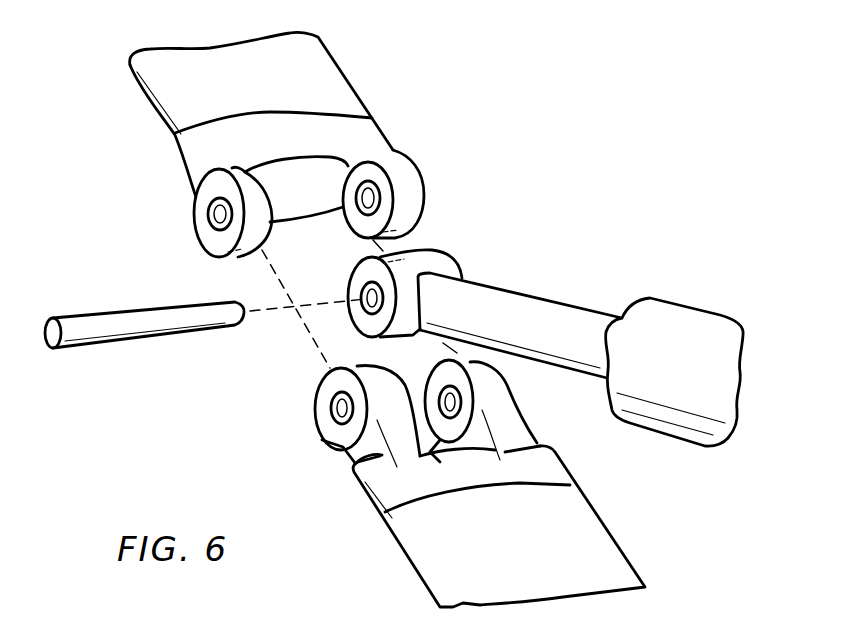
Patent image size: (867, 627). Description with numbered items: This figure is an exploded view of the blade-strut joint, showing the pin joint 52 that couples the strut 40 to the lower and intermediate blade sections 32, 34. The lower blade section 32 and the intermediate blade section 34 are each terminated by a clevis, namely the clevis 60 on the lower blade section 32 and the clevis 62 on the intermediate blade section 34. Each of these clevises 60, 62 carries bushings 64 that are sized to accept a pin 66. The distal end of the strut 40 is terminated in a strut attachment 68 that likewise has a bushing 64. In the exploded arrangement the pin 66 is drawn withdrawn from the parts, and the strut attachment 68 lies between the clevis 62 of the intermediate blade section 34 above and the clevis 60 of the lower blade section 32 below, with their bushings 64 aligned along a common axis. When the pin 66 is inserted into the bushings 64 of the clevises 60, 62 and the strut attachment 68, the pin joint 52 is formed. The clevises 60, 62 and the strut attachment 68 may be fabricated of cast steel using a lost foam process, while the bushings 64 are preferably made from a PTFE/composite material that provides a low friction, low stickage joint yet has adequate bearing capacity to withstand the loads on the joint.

The lower blade section 32 is at (412, 570).
The intermediate blade section 34 is at (323, 62).
The strut 40 is at (548, 308).
The pin joint 52 is at (145, 187).
The clevis 60 is at (518, 414).
The clevis 62 is at (396, 150).
The bushing 64 is at (212, 227).
The pin 66 is at (150, 335).
The strut attachment 68 is at (453, 267).